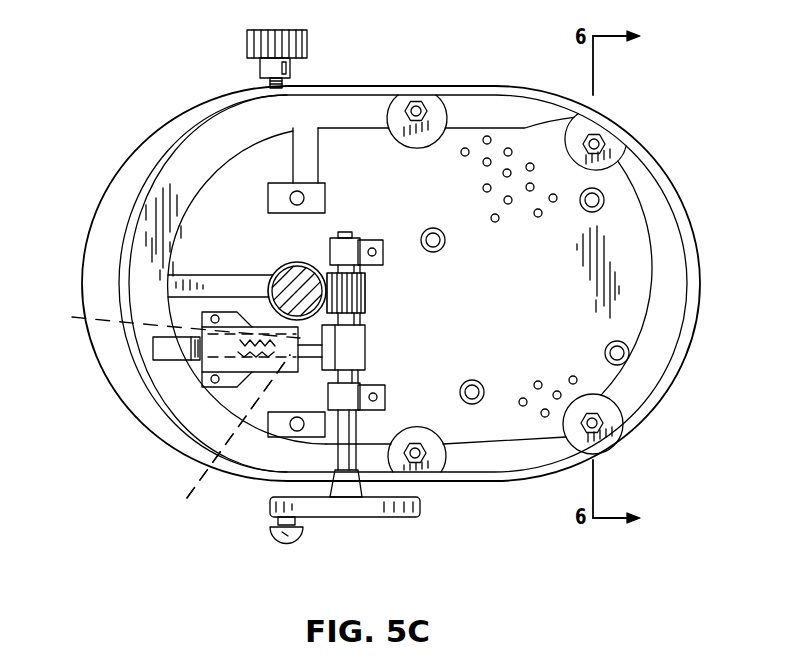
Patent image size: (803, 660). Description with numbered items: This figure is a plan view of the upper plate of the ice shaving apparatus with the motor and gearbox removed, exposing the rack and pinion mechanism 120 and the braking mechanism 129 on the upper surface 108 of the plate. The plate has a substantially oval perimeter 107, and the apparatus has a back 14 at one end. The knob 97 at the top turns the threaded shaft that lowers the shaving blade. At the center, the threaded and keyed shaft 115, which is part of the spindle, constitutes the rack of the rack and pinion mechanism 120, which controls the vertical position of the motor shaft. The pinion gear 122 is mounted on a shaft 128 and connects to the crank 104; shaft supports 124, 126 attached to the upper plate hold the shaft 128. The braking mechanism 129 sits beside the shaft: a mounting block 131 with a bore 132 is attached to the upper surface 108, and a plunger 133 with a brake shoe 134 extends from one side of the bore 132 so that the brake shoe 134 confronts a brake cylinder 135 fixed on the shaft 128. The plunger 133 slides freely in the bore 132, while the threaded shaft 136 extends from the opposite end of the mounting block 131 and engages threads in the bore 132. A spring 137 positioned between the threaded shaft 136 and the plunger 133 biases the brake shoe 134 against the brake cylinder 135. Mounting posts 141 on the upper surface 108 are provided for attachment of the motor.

The back 14 is at (324, 186).
The knob 97 is at (309, 40).
The crank 104 is at (360, 518).
The perimeter 107 is at (128, 215).
The upper surface 108 is at (628, 260).
The threaded and keyed shaft 115 is at (276, 272).
The rack and pinion mechanism 120 is at (268, 256).
The pinion gear 122 is at (367, 286).
The shaft support 124 is at (362, 240).
The shaft support 126 is at (358, 411).
The shaft 128 is at (342, 452).
The braking mechanism 129 is at (176, 408).
The mounting block 131 is at (207, 373).
The bore 132 is at (226, 439).
The plunger 133 is at (276, 392).
The brake shoe 134 is at (332, 356).
The brake cylinder 135 is at (360, 340).
The threaded shaft 136 is at (200, 356).
The spring 137 is at (72, 318).
The mounting posts 141 is at (600, 188).